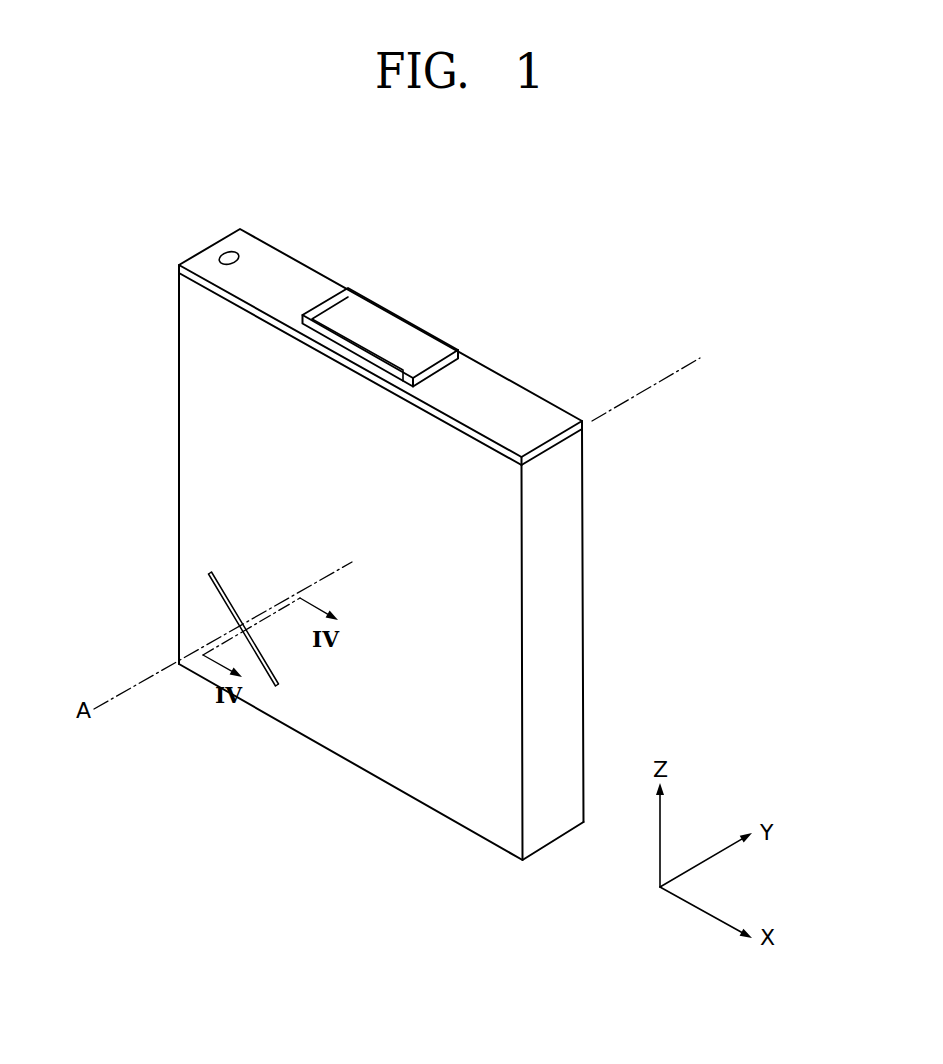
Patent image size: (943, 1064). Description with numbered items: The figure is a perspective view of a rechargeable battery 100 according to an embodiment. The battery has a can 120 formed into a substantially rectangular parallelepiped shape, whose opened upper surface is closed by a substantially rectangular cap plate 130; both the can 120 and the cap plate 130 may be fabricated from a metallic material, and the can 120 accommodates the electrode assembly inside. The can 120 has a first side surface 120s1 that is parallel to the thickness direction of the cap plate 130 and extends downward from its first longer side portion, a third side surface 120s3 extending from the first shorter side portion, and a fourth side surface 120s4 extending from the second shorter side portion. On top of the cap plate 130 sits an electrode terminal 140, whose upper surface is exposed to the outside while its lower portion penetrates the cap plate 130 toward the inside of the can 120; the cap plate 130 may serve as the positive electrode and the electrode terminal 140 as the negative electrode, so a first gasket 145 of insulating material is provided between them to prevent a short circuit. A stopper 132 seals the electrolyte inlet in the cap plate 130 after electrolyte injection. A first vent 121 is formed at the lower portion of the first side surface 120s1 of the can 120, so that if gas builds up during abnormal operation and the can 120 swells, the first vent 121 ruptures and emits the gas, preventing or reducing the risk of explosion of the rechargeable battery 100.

The rechargeable battery 100 is at (593, 279).
The can 120 is at (442, 829).
The first side surface 120s1 is at (382, 745).
The third side surface 120s3 is at (178, 556).
The fourth side surface 120s4 is at (573, 648).
The first vent 121 is at (263, 668).
The cap plate 130 is at (487, 390).
The stopper 132 is at (236, 252).
The electrode terminal 140 is at (373, 315).
The first gasket 145 is at (341, 300).